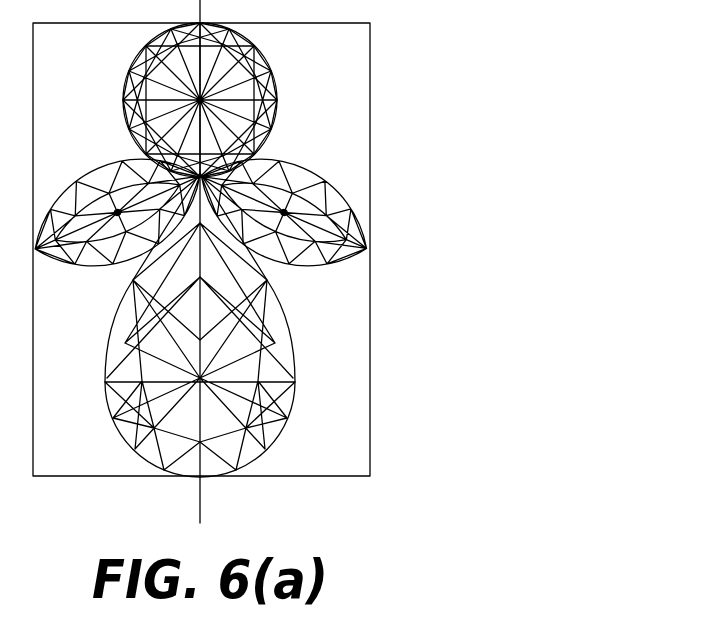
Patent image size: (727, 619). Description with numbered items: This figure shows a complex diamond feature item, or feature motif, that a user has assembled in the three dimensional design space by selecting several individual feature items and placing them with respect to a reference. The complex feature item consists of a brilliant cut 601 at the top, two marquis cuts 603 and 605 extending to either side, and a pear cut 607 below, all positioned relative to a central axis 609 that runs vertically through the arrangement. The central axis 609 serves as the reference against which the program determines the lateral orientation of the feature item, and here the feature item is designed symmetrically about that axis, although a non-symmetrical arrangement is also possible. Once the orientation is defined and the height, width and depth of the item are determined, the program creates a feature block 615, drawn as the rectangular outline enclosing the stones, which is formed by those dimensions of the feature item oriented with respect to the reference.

The brilliant cut 601 is at (268, 50).
The marquis cut 603 is at (288, 172).
The marquis cut 605 is at (78, 178).
The pear cut 607 is at (276, 322).
The central axis 609 is at (200, 496).
The feature block 615 is at (370, 368).